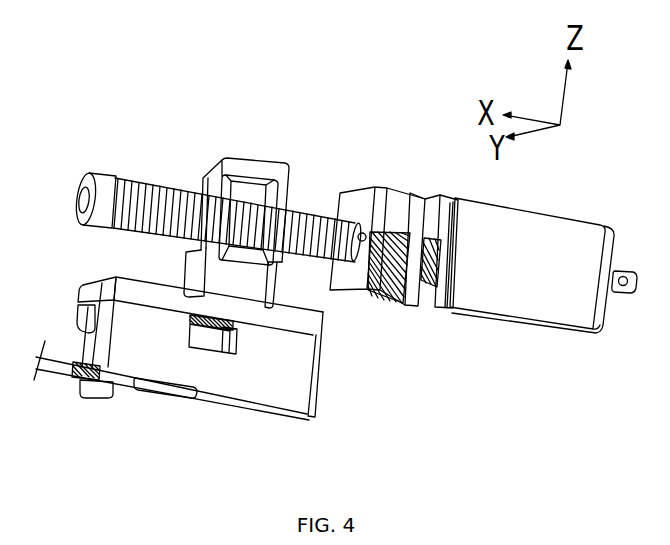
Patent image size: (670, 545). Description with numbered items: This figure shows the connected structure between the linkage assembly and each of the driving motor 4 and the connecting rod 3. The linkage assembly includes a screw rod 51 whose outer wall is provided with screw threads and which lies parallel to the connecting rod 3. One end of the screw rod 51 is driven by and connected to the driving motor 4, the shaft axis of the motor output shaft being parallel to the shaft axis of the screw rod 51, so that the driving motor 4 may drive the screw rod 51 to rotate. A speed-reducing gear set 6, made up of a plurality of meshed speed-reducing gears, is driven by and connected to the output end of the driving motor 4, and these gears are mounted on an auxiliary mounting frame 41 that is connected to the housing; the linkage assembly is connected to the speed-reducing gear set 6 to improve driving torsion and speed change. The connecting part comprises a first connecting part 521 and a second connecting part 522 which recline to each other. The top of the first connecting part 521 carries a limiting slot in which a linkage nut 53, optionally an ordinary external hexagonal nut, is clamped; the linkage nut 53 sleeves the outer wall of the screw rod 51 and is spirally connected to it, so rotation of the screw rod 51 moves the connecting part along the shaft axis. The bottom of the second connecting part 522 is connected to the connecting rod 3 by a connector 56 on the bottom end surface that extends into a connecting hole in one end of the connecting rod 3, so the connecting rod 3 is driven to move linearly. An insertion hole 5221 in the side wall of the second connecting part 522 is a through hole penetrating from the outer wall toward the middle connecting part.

The connecting rod 3 is at (56, 359).
The driving motor 4 is at (527, 280).
The auxiliary mounting frame 41 is at (360, 201).
The screw rod 51 is at (143, 190).
The linkage nut 53 is at (182, 177).
The first connecting part 521 is at (242, 177).
The second connecting part 522 is at (305, 363).
The insertion hole 5221 is at (216, 336).
The connector 56 is at (103, 399).
The speed-reducing gear set 6 is at (404, 232).